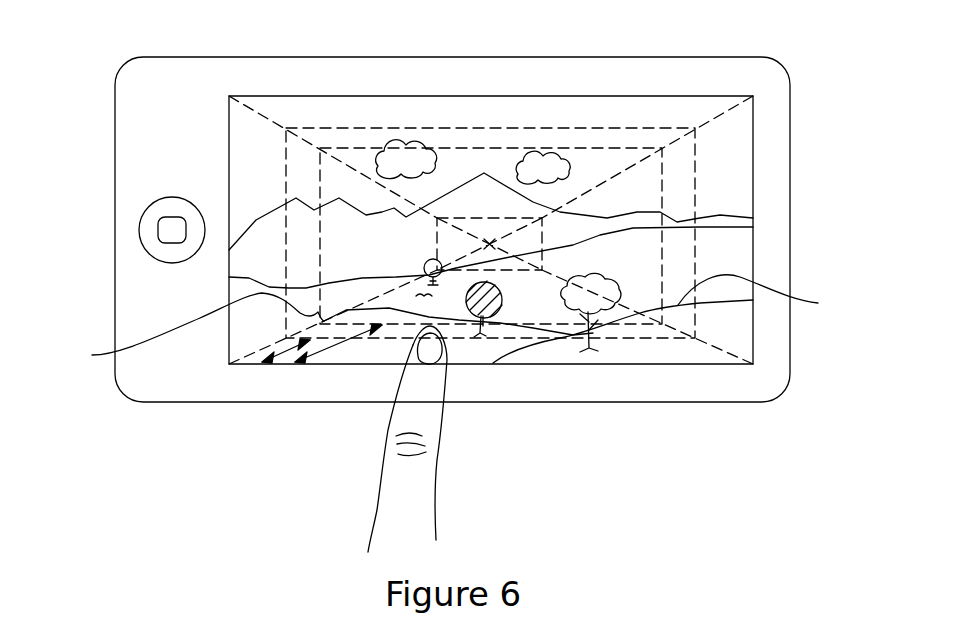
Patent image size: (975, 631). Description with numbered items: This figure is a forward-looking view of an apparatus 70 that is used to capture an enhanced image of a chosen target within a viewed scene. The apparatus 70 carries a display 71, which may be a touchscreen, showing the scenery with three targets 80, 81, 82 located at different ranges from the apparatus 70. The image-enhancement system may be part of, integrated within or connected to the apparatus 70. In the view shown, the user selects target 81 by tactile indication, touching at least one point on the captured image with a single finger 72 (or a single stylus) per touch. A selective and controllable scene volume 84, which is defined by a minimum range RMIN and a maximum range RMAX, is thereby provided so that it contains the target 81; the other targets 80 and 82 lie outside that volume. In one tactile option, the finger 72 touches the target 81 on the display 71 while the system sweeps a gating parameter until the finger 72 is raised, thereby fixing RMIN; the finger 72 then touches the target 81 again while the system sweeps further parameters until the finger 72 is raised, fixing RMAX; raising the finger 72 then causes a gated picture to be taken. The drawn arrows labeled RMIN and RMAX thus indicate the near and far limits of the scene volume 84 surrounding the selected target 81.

The apparatus 70 is at (204, 57).
The display 71 is at (311, 95).
The finger 72 is at (418, 490).
The target 80 is at (440, 278).
The target 81 is at (502, 302).
The target 82 is at (623, 293).
The selective and controllable scene volume 84 is at (455, 322).
The minimum range RMIN is at (288, 365).
The maximum range RMAX is at (345, 347).